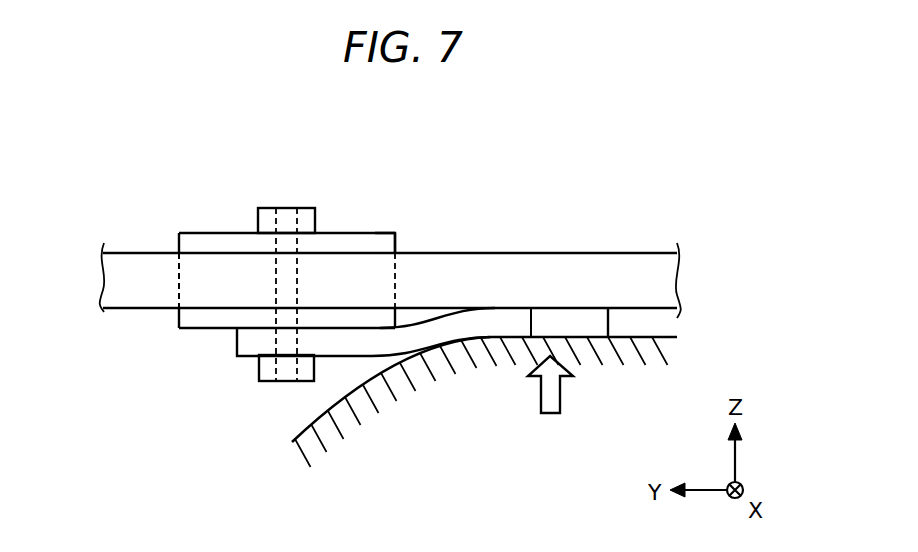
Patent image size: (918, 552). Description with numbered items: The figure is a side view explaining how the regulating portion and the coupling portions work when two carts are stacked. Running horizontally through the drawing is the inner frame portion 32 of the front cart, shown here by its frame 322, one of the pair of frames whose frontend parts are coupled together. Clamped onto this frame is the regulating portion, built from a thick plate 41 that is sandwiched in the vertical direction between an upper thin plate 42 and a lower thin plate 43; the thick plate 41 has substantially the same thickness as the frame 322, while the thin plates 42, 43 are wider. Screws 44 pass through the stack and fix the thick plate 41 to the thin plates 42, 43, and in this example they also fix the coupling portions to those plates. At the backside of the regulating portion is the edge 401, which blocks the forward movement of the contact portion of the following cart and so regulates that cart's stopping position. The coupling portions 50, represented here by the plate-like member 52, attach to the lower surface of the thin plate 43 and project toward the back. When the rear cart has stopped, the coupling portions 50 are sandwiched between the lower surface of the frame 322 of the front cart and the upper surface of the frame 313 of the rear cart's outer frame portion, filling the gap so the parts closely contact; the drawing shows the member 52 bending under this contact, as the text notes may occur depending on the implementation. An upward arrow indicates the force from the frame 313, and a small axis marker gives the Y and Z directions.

The inner frame portion 32 is at (613, 250).
The frame 322 is at (390, 226).
The thick plate 41 is at (178, 272).
The thin plate 42 is at (345, 243).
The thin plate 43 is at (202, 318).
The screws 44 is at (270, 220).
The edge 401 is at (395, 248).
The frame 313 is at (531, 308).
The coupling portions 50 is at (598, 323).
The plate-like member 52 is at (691, 322).